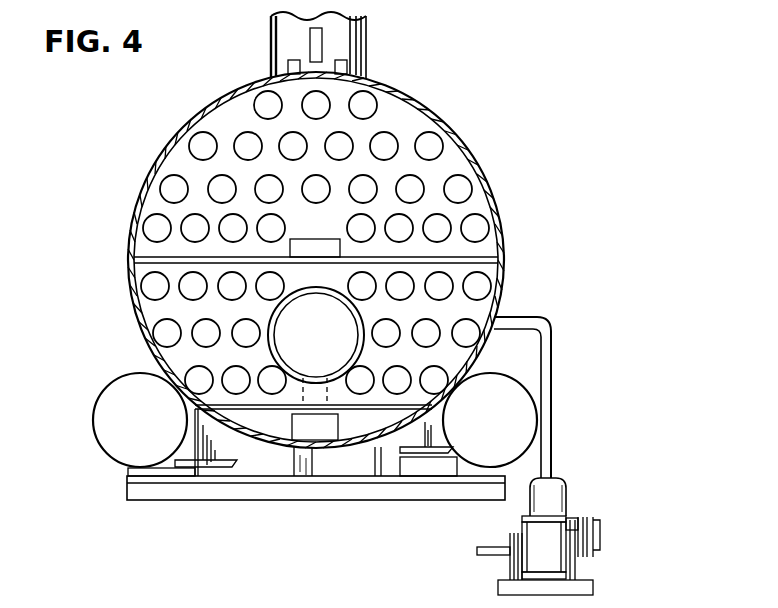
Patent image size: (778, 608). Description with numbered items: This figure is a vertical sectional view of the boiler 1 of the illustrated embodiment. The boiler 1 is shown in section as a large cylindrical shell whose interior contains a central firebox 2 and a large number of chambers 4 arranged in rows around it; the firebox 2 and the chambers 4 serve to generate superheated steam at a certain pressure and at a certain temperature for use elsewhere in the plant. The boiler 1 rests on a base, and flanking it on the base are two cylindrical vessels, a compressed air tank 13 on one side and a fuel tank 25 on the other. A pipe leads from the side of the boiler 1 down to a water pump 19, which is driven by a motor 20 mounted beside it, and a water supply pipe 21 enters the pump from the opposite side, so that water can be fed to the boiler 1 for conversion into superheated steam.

The boiler 1 is at (405, 116).
The firebox 2 is at (318, 372).
The chambers 4 is at (436, 150).
The compressed air tank 13 is at (112, 403).
The fuel tank 25 is at (518, 398).
The water pump 19 is at (560, 497).
The motor 20 is at (545, 563).
The water supply pipe 21 is at (492, 547).